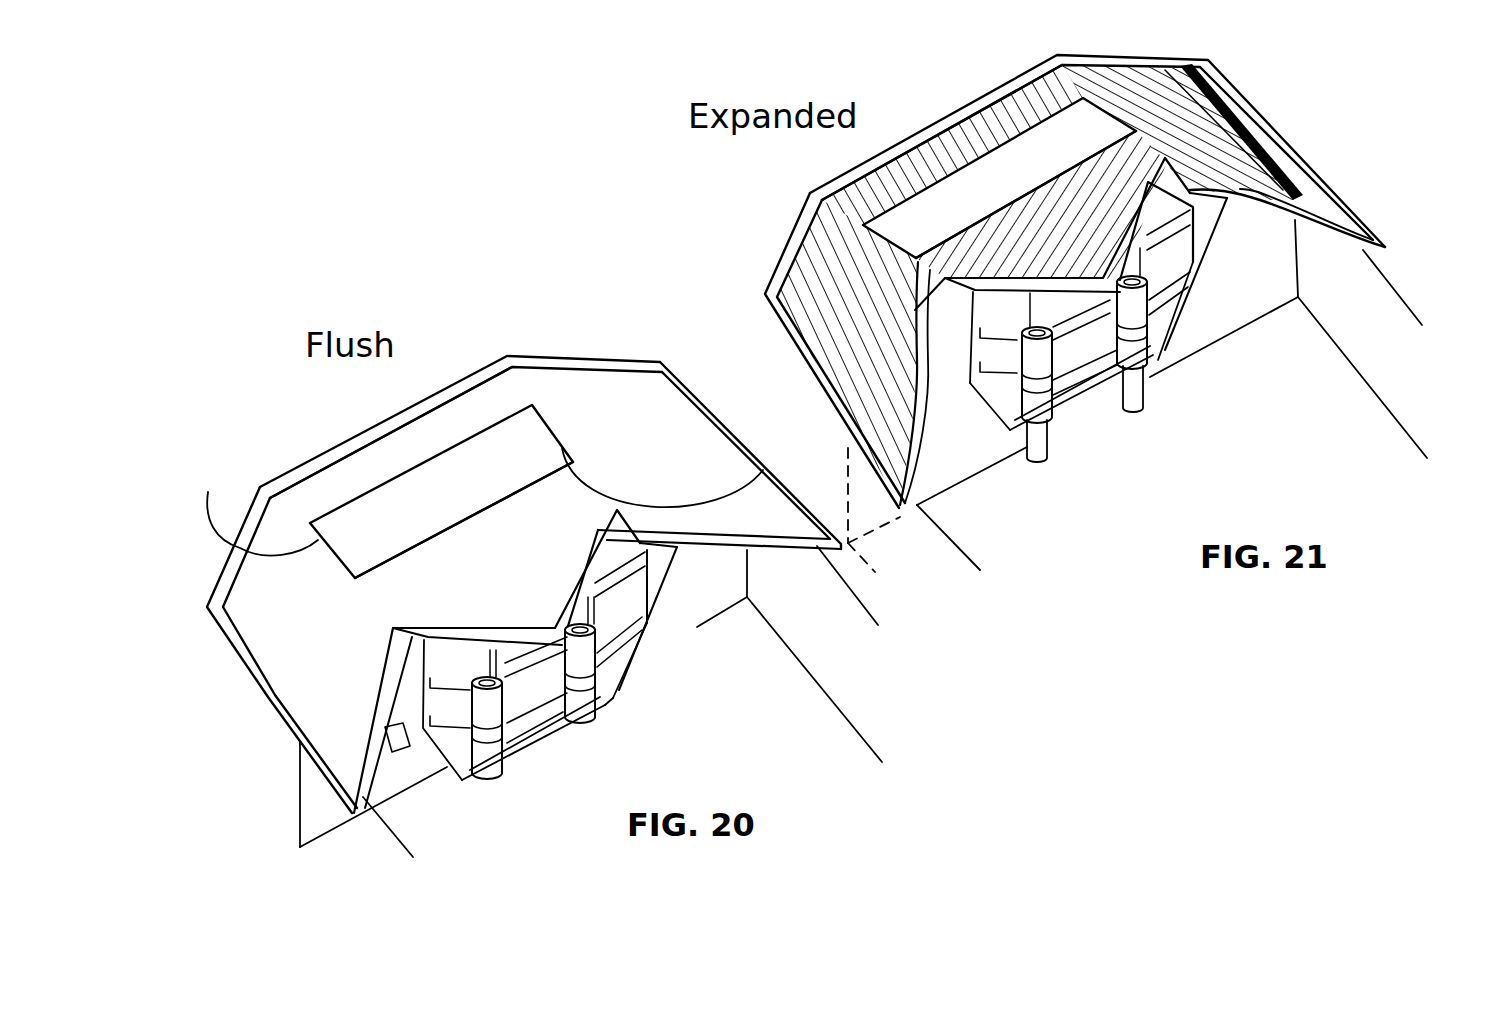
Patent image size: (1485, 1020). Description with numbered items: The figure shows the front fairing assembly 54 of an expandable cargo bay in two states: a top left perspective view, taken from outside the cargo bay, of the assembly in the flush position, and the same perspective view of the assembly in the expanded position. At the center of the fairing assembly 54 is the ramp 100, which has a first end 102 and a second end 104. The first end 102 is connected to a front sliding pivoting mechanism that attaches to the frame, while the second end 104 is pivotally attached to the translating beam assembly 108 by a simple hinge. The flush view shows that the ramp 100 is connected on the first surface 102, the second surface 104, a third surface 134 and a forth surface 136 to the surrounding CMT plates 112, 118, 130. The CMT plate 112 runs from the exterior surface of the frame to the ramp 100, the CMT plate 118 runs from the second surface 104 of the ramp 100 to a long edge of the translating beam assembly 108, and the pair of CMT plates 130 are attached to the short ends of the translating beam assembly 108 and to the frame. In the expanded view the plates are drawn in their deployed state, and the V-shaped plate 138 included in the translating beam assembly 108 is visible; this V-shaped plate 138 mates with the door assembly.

In FIG. 20, the front fairing assembly 54 is at (338, 292).
In FIG. 21, the front fairing assembly 54 is at (753, 77).
In FIG. 20, the ramp 100 is at (414, 506).
In FIG. 21, the ramp 100 is at (967, 200).
In FIG. 20, the first end 102 is at (483, 371).
In FIG. 20, the second end 104 is at (766, 442).
In FIG. 20, the translating beam assembly 108 is at (560, 688).
In FIG. 21, the translating beam assembly 108 is at (1113, 359).
In FIG. 20, the CMT plate 112 is at (388, 464).
In FIG. 21, the CMT plate 112 is at (942, 113).
In FIG. 20, the CMT plate 118 is at (455, 564).
In FIG. 21, the CMT plate 118 is at (905, 490).
In FIG. 20, the CMT plates 130 is at (624, 428).
In FIG. 21, the CMT plates 130 is at (1022, 262).
In FIG. 20, the third surface 134 is at (662, 397).
In FIG. 20, the forth surface 136 is at (262, 489).
In FIG. 20, the V-shaped plate 138 is at (504, 612).
In FIG. 21, the V-shaped plate 138 is at (1045, 274).